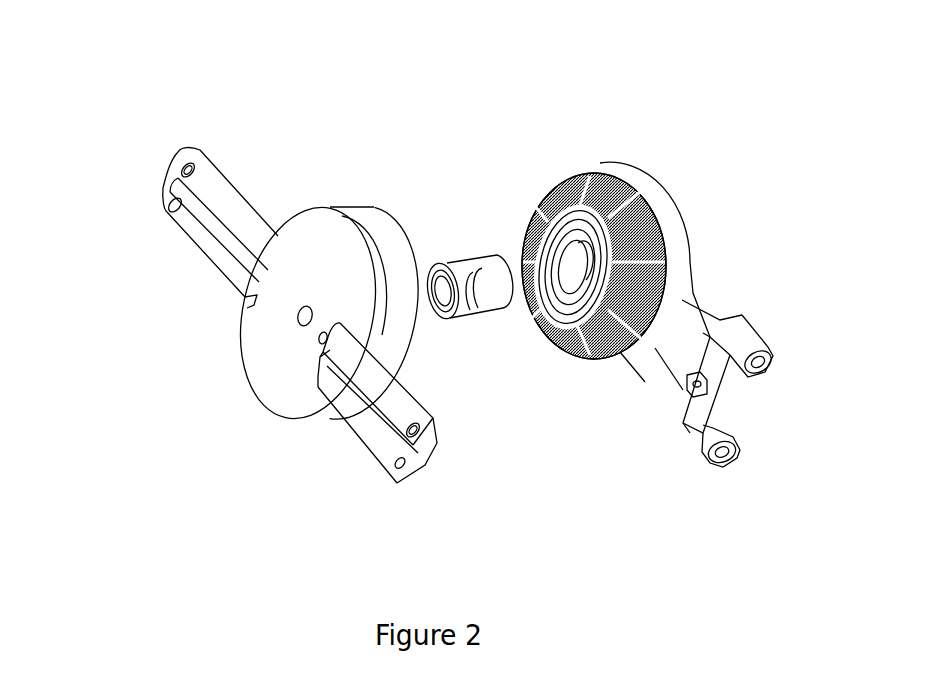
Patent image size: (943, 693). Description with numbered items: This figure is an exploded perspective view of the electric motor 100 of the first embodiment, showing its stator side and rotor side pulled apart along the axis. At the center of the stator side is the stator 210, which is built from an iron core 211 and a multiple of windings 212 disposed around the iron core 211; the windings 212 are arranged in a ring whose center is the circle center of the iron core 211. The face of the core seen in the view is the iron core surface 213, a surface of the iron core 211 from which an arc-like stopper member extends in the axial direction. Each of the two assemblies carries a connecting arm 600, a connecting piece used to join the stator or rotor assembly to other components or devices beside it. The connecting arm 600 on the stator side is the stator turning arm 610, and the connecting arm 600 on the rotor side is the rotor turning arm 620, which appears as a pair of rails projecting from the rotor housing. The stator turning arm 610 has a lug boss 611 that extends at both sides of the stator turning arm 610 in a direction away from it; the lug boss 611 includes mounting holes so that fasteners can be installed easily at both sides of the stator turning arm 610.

The electric motor 100 is at (450, 70).
The stator 210 is at (653, 122).
The iron core 211 is at (567, 180).
The windings 212 is at (600, 172).
The iron core surface 213 is at (563, 345).
The connecting arm 600 is at (620, 513).
The stator turning arm 610 is at (660, 437).
The lug boss 611 is at (750, 330).
The rotor turning arm 620 is at (136, 176).